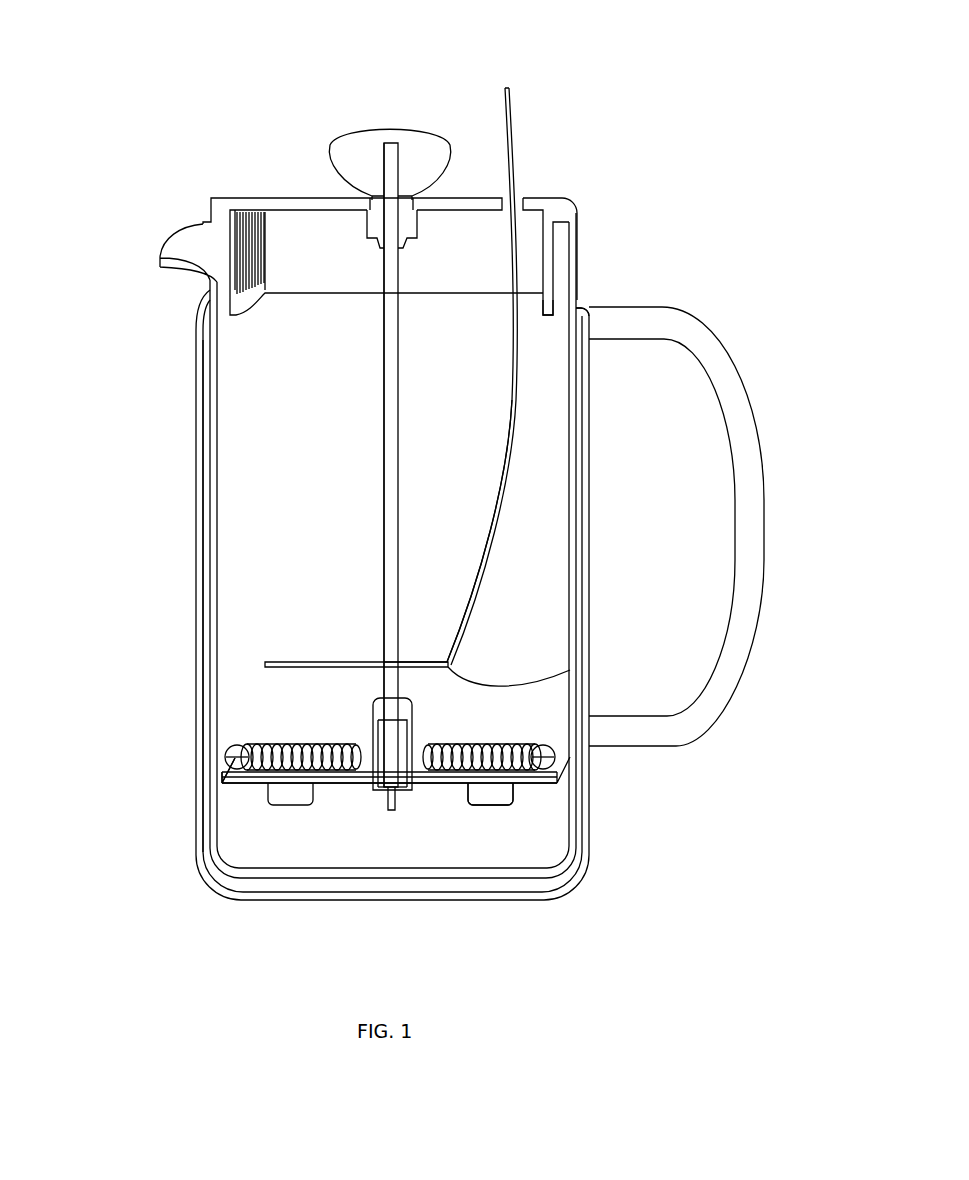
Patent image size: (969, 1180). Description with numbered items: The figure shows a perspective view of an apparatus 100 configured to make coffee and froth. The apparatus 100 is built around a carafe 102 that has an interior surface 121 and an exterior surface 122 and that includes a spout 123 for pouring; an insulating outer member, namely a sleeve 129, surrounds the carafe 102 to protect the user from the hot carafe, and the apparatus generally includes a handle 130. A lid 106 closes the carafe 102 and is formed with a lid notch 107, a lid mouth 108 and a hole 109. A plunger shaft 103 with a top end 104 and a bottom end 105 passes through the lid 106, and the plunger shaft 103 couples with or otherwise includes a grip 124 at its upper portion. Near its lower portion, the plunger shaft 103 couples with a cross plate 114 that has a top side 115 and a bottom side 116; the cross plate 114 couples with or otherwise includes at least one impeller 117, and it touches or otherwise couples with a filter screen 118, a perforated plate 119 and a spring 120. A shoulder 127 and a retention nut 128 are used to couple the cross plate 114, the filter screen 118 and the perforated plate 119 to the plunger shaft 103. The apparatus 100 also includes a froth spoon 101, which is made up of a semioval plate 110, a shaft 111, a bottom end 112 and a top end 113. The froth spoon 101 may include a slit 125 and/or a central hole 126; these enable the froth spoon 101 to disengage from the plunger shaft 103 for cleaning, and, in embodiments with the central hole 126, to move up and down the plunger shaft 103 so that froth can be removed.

The apparatus 100 is at (474, 58).
The froth spoon 101 is at (545, 313).
The carafe 102 is at (205, 588).
The plunger shaft 103 is at (383, 507).
The top end 104 is at (392, 142).
The bottom end 105 is at (390, 786).
The lid 106 is at (281, 197).
The lid notch 107 is at (518, 197).
The lid mouth 108 is at (252, 252).
The hole 109 is at (380, 212).
The semioval plate 110 is at (335, 660).
The shaft 111 is at (503, 470).
The bottom end 112 is at (570, 670).
The top end 113 is at (508, 88).
The cross plate 114 is at (550, 788).
The top side 115 is at (557, 776).
The bottom side 116 is at (533, 786).
The impeller 117 is at (497, 805).
The filter screen 118 is at (228, 783).
The perforated plate 119 is at (220, 754).
The spring 120 is at (255, 742).
The interior surface 121 is at (210, 306).
The exterior surface 122 is at (213, 387).
The spout 123 is at (185, 233).
The grip 124 is at (412, 130).
The slit 125 is at (413, 662).
The central hole 126 is at (396, 663).
The shoulder 127 is at (370, 787).
The retention nut 128 is at (400, 786).
The sleeve 129 is at (589, 386).
The handle 130 is at (763, 458).